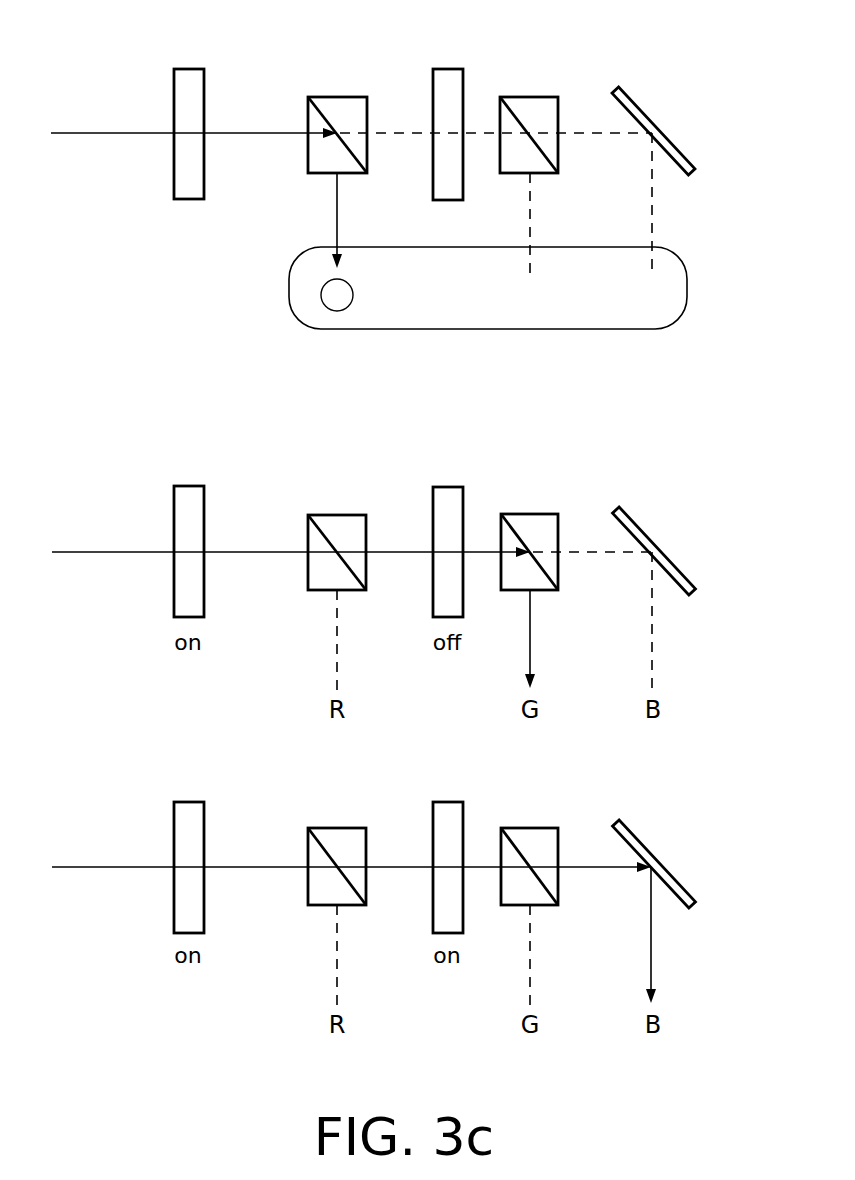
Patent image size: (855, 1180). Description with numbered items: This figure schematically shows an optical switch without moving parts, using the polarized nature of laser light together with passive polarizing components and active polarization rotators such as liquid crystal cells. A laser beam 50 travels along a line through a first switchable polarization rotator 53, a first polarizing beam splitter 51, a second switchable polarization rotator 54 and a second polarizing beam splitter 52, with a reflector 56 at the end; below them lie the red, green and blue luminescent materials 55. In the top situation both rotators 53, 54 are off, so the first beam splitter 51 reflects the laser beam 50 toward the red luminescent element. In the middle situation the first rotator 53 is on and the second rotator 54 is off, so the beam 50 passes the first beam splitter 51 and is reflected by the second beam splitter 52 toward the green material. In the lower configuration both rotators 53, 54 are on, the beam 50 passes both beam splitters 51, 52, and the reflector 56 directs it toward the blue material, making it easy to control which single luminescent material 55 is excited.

The laser beam 50 is at (95, 132).
The first polarizing beam splitter 51 is at (338, 95).
The second polarizing beam splitter 52 is at (529, 95).
The first switchable polarization rotator 53 is at (190, 66).
The second switchable polarization rotator 54 is at (448, 66).
The luminescent materials 55 is at (688, 291).
The reflector 56 is at (640, 108).